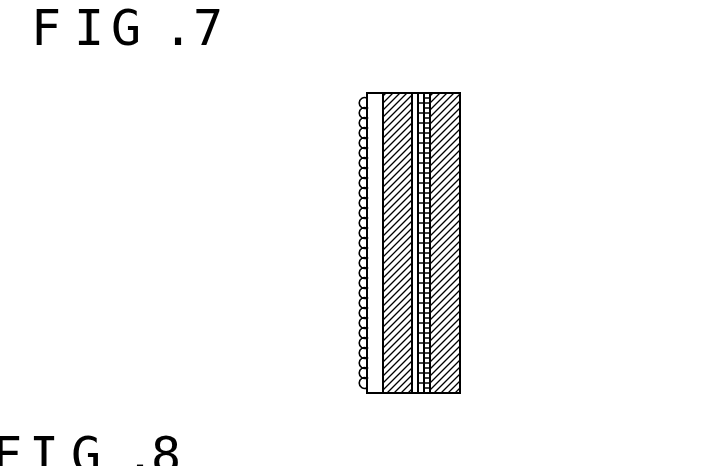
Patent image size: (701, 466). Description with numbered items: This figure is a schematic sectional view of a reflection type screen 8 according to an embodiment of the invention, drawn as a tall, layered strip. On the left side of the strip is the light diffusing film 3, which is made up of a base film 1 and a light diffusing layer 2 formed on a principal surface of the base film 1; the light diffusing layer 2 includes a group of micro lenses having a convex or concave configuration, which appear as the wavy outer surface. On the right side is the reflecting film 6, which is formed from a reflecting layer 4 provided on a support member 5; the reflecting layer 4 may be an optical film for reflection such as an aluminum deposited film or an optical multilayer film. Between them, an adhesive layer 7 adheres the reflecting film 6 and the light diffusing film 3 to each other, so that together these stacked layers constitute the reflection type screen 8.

The base film 1 is at (388, 93).
The light diffusing layer 2 is at (360, 101).
The light diffusing film 3 is at (313, 12).
The reflecting layer 4 is at (426, 93).
The support member 5 is at (443, 93).
The reflecting film 6 is at (517, 13).
The adhesive layer 7 is at (420, 93).
The reflection type screen 8 is at (367, 408).